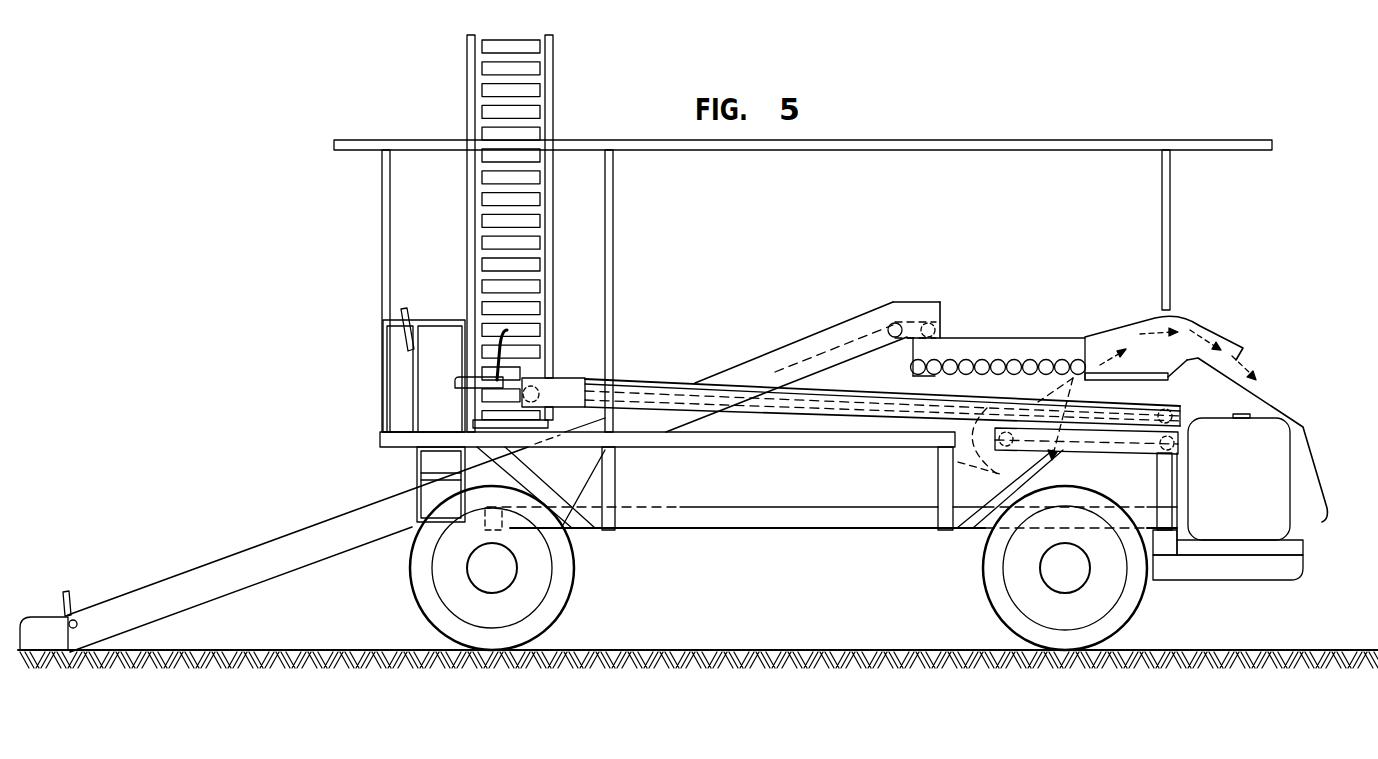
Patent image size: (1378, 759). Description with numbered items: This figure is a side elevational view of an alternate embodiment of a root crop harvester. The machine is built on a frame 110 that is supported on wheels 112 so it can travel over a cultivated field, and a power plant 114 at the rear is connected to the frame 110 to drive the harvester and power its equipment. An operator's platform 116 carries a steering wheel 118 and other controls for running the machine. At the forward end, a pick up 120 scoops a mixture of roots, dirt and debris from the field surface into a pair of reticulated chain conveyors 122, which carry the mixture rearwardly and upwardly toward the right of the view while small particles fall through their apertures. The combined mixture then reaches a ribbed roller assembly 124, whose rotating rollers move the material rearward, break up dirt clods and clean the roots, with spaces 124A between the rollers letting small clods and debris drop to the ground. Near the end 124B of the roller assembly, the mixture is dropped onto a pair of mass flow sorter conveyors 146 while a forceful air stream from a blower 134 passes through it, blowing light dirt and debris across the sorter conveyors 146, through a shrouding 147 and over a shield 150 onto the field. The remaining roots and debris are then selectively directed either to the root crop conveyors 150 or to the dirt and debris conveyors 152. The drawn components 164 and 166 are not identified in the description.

The frame 110 is at (818, 525).
The wheels 112 is at (557, 608).
The power plant 114 is at (1249, 489).
The operator's platform 116 is at (396, 400).
The steering wheel 118 is at (405, 306).
The pick up 120 is at (55, 605).
The reticulated chain conveyors 122 is at (297, 563).
The ribbed roller assembly 124 is at (1010, 372).
The spaces 124A is at (930, 378).
The end of the ribbed roller assembly 124B is at (1093, 337).
The blower 134 is at (975, 460).
The mass flow sorter conveyors 146 is at (1160, 381).
The shrouding 147 is at (1245, 345).
The root crop conveyors 150 is at (778, 410).
The dirt and debris conveyors 152 is at (1105, 447).
The foot pedal 164 is at (540, 417).
The ladder 166 is at (540, 241).